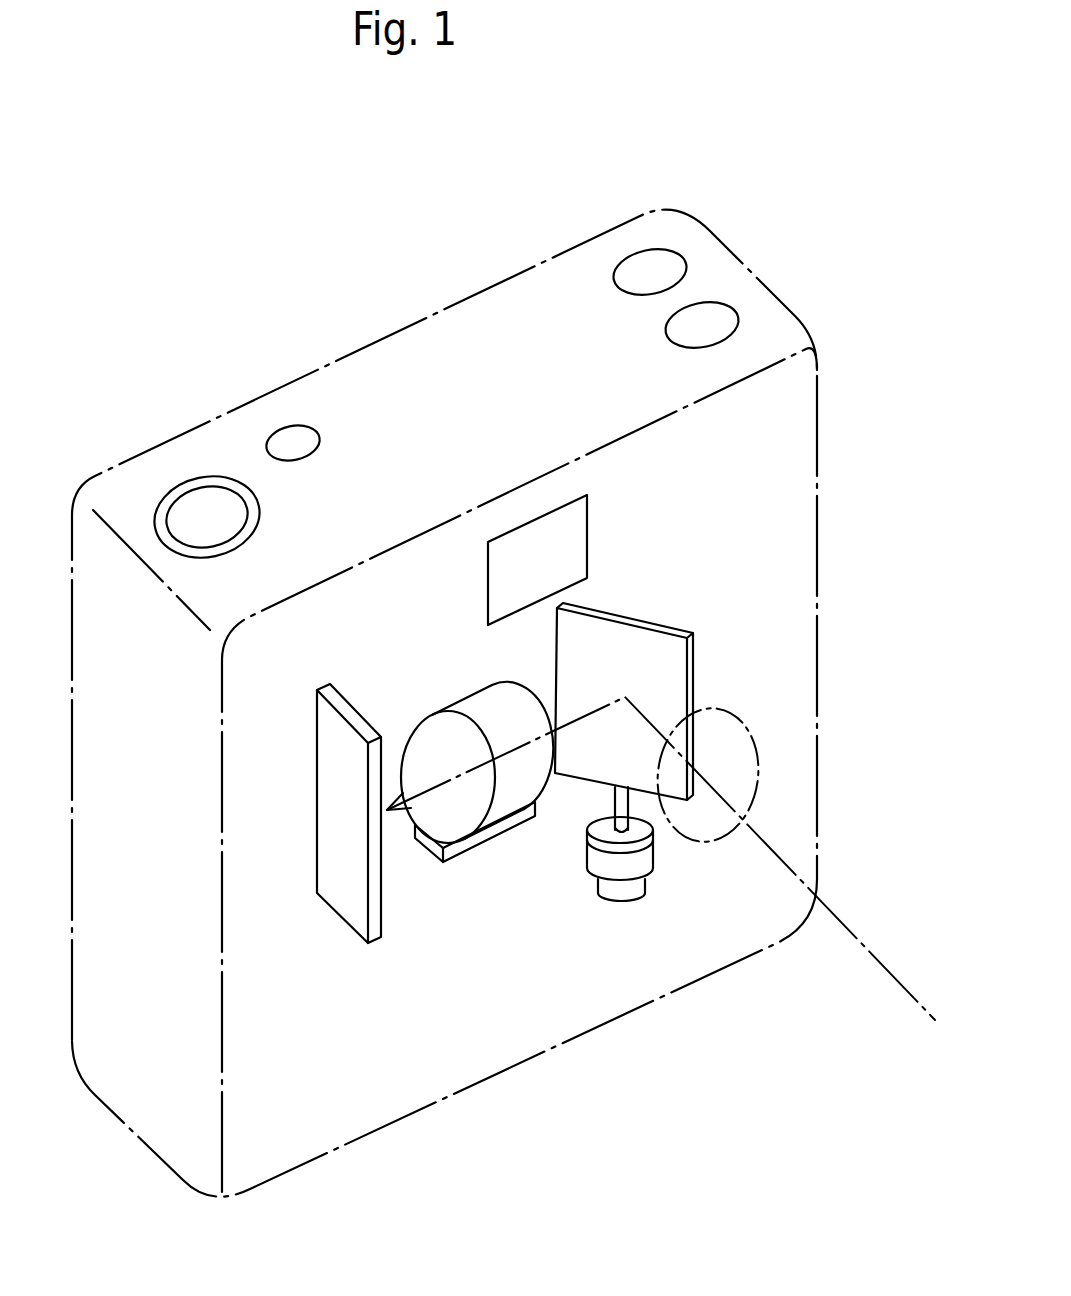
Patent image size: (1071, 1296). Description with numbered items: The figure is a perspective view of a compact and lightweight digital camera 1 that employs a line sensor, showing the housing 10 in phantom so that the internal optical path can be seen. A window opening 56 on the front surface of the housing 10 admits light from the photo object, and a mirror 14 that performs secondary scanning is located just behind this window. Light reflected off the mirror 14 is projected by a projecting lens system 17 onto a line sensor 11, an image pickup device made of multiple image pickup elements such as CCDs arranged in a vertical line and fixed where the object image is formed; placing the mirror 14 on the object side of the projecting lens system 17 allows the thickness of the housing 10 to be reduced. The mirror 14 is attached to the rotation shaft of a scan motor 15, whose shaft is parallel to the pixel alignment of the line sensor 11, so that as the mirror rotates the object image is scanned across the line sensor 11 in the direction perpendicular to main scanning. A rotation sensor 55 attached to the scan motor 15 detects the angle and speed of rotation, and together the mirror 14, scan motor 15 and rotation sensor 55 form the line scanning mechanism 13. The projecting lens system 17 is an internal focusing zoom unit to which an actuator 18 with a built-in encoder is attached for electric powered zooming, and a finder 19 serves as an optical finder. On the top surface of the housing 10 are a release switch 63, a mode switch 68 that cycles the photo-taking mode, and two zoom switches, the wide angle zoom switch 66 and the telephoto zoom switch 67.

The digital camera 1 is at (134, 286).
The housing 10 is at (420, 322).
The line sensor 11 is at (323, 795).
The scanning mechanism 13 is at (667, 874).
The mirror 14 is at (697, 680).
The scan motor 15 is at (647, 860).
The projecting lens system 17 is at (472, 698).
The actuator 18 is at (425, 853).
The finder 19 is at (588, 538).
The rotation sensor 55 is at (605, 895).
The window opening 56 is at (750, 744).
The release switch 63 is at (258, 518).
The wide angle zoom switch 66 is at (677, 257).
The telephoto zoom switch 67 is at (717, 307).
The mode switch 68 is at (323, 438).